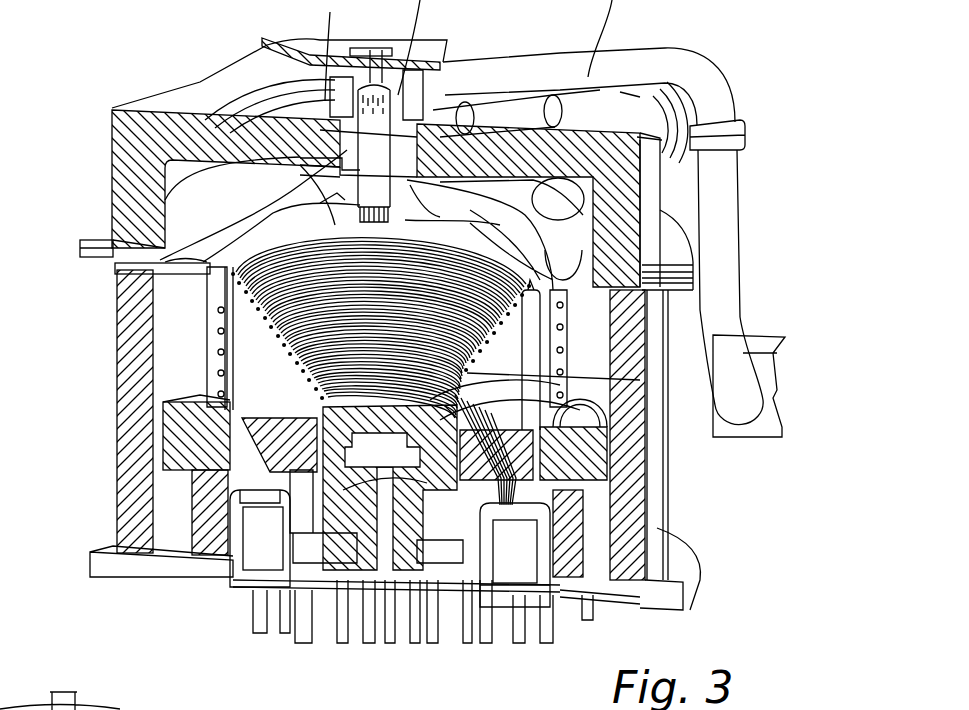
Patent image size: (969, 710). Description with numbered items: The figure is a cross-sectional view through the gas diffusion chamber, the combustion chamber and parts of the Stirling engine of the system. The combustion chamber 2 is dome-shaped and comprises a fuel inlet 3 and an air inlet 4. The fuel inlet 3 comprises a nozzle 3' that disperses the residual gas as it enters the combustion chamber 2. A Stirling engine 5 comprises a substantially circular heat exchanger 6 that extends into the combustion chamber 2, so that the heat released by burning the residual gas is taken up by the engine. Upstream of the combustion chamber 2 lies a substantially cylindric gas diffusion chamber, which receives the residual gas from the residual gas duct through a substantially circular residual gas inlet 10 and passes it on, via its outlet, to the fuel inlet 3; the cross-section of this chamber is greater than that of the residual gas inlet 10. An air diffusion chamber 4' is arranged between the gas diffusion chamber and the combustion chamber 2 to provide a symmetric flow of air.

The combustion chamber 2 is at (242, 290).
The fuel inlet 3 is at (260, 100).
The nozzle 3' is at (248, 134).
The air inlet 4 is at (427, 164).
The air diffusion chamber 4' is at (354, 398).
The Stirling engine 5 is at (560, 505).
The heat exchanger 6 is at (565, 383).
The residual gas inlet 10 is at (107, 697).